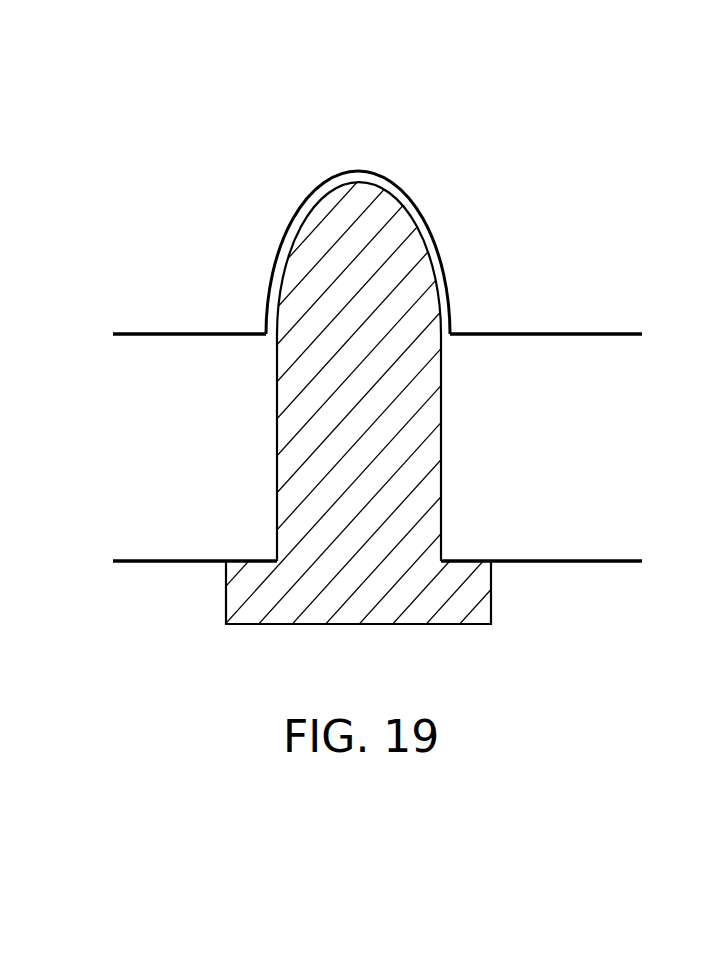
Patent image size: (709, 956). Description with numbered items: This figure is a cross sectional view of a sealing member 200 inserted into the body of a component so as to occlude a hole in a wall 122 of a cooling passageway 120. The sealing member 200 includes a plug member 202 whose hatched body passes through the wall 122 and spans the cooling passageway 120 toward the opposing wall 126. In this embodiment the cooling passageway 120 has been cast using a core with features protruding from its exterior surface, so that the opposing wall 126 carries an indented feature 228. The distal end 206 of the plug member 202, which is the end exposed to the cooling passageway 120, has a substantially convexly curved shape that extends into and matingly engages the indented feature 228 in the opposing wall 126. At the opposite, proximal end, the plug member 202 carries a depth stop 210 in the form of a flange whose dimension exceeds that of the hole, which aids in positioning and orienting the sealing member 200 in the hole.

The sealing member 200 is at (354, 393).
The plug member 202 is at (386, 409).
The distal end 206 is at (372, 207).
The depth stop 210 is at (462, 593).
The indented feature 228 is at (358, 163).
The cooling passageway 120 is at (539, 454).
The wall 122 is at (558, 603).
The opposing wall 126 is at (533, 322).